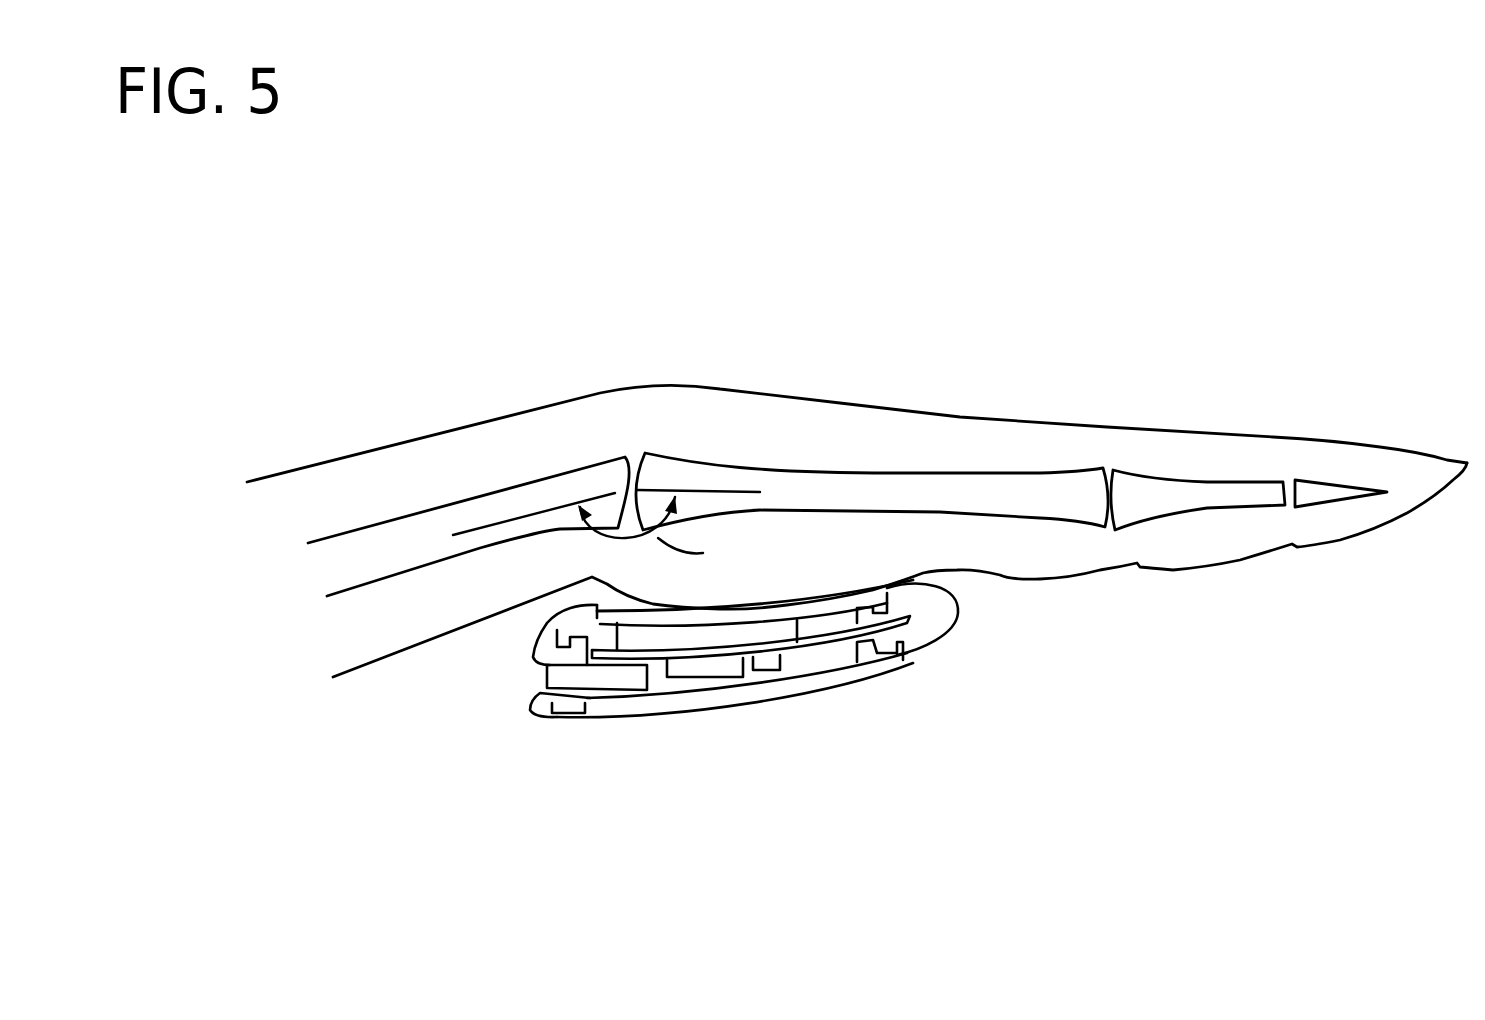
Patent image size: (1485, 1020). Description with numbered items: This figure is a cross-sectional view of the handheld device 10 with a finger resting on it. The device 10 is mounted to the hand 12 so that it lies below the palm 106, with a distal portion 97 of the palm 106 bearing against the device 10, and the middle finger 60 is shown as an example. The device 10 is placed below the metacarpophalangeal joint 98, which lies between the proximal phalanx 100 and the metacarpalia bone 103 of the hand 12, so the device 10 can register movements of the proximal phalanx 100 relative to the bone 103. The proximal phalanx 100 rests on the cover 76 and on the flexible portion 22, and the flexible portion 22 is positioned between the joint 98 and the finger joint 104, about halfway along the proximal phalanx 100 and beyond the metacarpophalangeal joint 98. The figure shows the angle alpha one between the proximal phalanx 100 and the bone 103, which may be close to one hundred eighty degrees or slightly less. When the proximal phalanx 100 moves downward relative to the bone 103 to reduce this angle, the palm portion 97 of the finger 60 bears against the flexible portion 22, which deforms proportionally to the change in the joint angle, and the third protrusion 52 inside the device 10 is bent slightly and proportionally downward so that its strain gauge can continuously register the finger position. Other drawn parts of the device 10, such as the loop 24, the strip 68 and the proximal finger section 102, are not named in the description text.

The device 10 is at (720, 710).
The hand 12 is at (493, 445).
The flexible portion 22 is at (923, 633).
The proximal loop of splint 24 is at (547, 705).
The third protrusion 52 is at (902, 627).
The middle finger 60 is at (967, 450).
The adjustment strip 68 is at (768, 633).
The cover 76 is at (543, 622).
The distal portion of the palm 97 is at (782, 604).
The metacarpophalangeal joint 98 is at (637, 487).
The proximal phalanx 100 is at (833, 488).
The proximal finger segment 102 is at (577, 423).
The metacarpalia bone 103 is at (437, 528).
The finger joint 104 is at (1124, 500).
The palm 106 is at (378, 623).